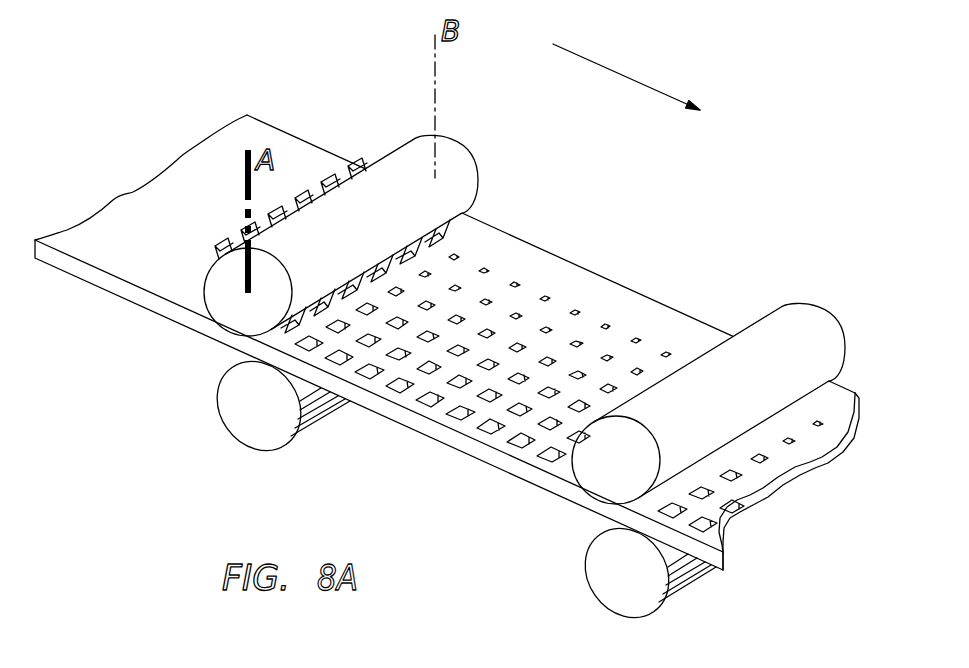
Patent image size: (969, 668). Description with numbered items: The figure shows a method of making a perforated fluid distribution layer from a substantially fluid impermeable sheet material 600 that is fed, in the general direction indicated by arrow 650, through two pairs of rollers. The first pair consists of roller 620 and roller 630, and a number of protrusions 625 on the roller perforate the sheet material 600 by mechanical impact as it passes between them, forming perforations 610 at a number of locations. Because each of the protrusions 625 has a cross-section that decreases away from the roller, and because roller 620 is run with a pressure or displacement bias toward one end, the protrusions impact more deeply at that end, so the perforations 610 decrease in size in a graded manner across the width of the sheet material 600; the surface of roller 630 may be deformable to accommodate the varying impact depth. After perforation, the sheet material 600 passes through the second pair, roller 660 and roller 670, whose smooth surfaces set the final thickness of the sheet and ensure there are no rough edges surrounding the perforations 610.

The sheet material 600 is at (600, 215).
The perforations 610 is at (510, 285).
The roller 620 is at (470, 157).
The protrusions 625 is at (272, 210).
The roller 630 is at (220, 412).
The arrow 650 is at (628, 78).
The roller 660 is at (840, 352).
The roller 670 is at (586, 565).